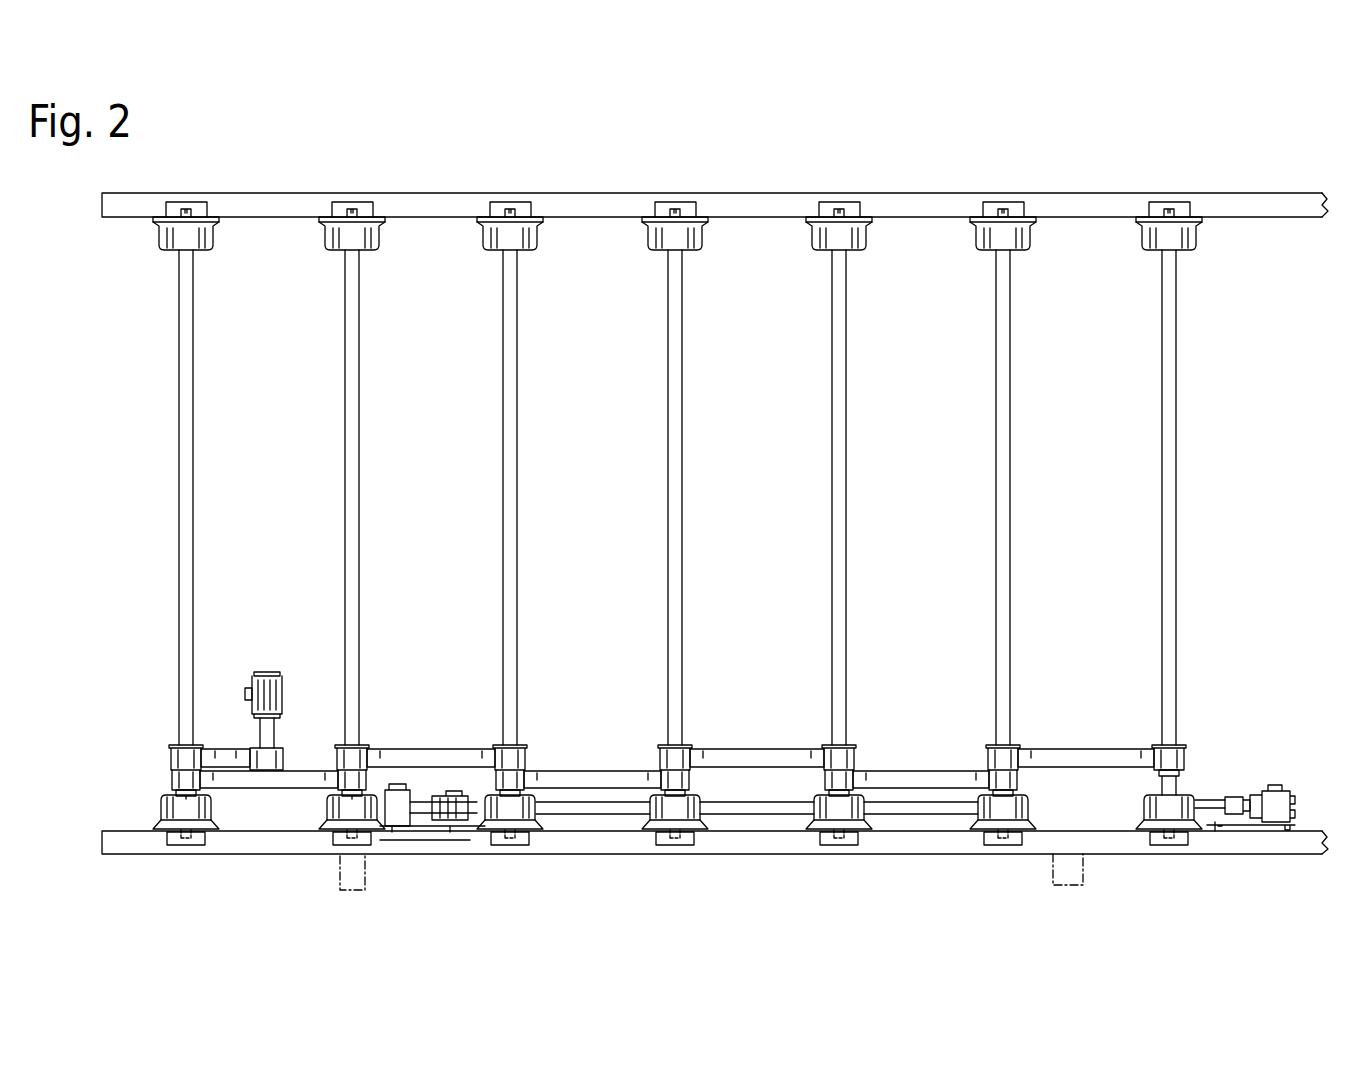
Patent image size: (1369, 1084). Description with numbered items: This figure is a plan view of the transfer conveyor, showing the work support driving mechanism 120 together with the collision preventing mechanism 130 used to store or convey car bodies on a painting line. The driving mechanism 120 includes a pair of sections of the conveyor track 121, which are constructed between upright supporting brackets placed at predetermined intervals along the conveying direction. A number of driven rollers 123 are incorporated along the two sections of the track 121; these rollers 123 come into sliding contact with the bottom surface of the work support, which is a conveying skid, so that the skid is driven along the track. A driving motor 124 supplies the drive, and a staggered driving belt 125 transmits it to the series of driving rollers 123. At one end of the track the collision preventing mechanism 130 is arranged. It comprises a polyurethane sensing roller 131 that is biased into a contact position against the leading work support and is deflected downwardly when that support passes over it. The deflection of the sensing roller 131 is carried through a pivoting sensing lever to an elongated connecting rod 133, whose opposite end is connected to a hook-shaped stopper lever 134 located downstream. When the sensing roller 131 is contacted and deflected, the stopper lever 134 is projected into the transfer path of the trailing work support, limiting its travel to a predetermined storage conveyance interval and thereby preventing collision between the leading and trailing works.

The work support driving mechanism 120 is at (1212, 455).
The conveyor track 121 is at (447, 205).
The driven rollers 123 is at (194, 240).
The driving motor 124 is at (270, 676).
The staggered driving belt 125 is at (217, 758).
The collision preventing mechanism 130 is at (1268, 760).
The sensing roller 131 is at (437, 805).
The connecting rod 133 is at (758, 805).
The stopper lever 134 is at (1250, 812).